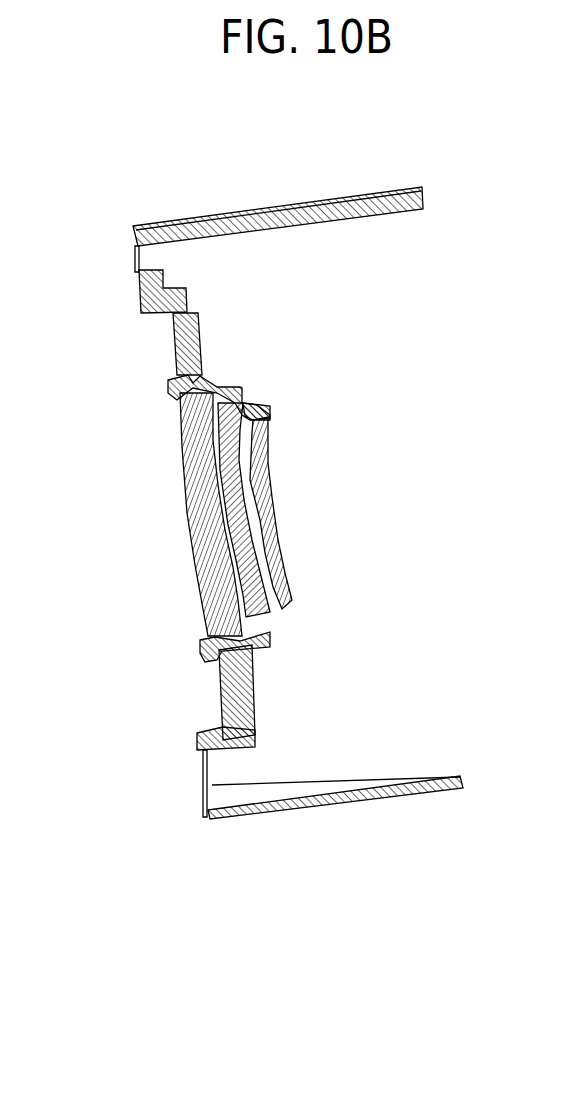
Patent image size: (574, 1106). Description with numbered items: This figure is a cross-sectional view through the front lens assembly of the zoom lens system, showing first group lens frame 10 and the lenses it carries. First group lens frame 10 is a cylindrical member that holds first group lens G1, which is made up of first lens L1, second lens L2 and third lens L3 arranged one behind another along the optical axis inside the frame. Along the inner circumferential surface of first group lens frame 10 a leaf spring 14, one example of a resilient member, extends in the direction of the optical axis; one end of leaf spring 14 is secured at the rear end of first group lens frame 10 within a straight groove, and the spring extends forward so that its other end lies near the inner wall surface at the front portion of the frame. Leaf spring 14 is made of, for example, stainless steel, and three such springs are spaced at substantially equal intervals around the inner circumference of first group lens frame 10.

The first group lens frame 10 is at (235, 222).
The leaf spring 14 is at (242, 785).
The first group lens G1 is at (165, 514).
The first lens L1 is at (188, 532).
The second lens L2 is at (235, 559).
The third lens L3 is at (272, 576).